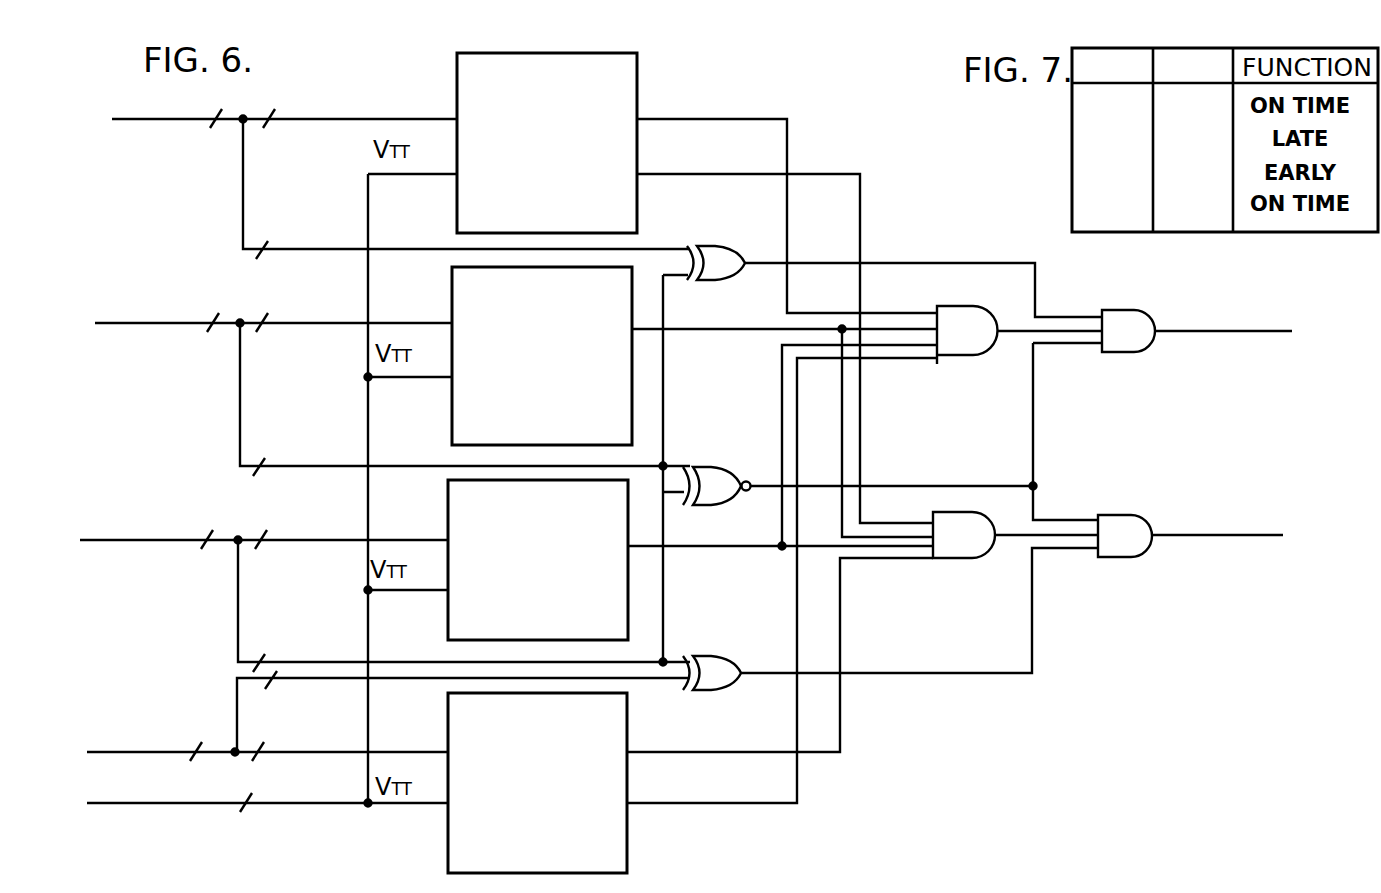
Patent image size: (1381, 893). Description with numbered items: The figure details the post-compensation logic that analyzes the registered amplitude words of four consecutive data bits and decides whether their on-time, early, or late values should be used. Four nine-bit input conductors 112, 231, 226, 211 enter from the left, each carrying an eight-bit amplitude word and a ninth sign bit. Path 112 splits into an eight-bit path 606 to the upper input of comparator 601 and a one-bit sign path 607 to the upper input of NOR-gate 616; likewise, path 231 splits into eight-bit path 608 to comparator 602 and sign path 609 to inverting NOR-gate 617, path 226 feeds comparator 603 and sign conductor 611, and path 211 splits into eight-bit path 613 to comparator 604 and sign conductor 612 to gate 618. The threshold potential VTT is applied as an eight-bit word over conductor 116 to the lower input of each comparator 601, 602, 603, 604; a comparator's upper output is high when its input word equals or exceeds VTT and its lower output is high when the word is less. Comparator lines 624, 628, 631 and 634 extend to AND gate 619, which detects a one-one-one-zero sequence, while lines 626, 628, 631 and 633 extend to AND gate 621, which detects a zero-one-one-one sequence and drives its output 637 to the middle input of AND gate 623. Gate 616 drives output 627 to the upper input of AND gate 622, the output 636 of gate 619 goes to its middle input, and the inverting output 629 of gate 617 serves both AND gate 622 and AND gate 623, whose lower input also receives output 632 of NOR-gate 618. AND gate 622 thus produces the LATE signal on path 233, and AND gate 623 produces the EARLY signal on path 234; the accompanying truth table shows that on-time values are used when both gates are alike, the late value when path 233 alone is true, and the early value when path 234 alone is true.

In FIG. 6, the input conductor 112 is at (195, 119).
In FIG. 6, the input conductor 231 is at (185, 323).
In FIG. 6, the input conductor 226 is at (162, 540).
In FIG. 6, the input conductor 211 is at (165, 752).
In FIG. 6, the conductor 116 is at (185, 804).
In FIG. 6, the comparator 601 is at (541, 221).
In FIG. 6, the comparator 602 is at (541, 432).
In FIG. 6, the comparator 603 is at (539, 637).
In FIG. 6, the comparator 604 is at (559, 858).
In FIG. 6, the eight-bit path 606 is at (350, 123).
In FIG. 6, the one-bit path 607 is at (352, 251).
In FIG. 6, the eight-bit path 608 is at (350, 326).
In FIG. 6, the one-bit path 609 is at (358, 466).
In FIG. 6, the conductor 611 is at (358, 662).
In FIG. 6, the conductor 612 is at (360, 679).
In FIG. 6, the eight-bit path 613 is at (350, 753).
In FIG. 6, the NOR-gate 616 is at (730, 246).
In FIG. 6, the inverting NOR-gate 617 is at (738, 466).
In FIG. 6, the NOR-gate 618 is at (732, 656).
In FIG. 6, the AND gate 619 is at (960, 306).
In FIG. 6, the AND gate 621 is at (975, 516).
In FIG. 6, the AND gate 622 is at (1117, 347).
In FIG. 6, the AND gate 623 is at (1117, 552).
In FIG. 6, the comparator output line 624 is at (821, 313).
In FIG. 6, the comparator output line 626 is at (830, 174).
In FIG. 6, the output of NOR-gate 616 627 is at (1000, 265).
In FIG. 6, the comparator output line 628 is at (758, 329).
In FIG. 6, the output path of inverting NOR-gate 617 629 is at (958, 486).
In FIG. 6, the comparator output line 631 is at (755, 546).
In FIG. 6, the output path of NOR-gate 618 632 is at (975, 673).
In FIG. 6, the comparator output line 633 is at (745, 752).
In FIG. 6, the comparator output line 634 is at (745, 803).
In FIG. 6, the output of AND gate 619 636 is at (1030, 334).
In FIG. 6, the output of AND gate 621 637 is at (1010, 561).
In FIG. 6, the path 233 is at (1292, 336).
In FIG. 7, the path 233 is at (1112, 134).
In FIG. 6, the path 234 is at (1283, 541).
In FIG. 7, the path 234 is at (1188, 134).